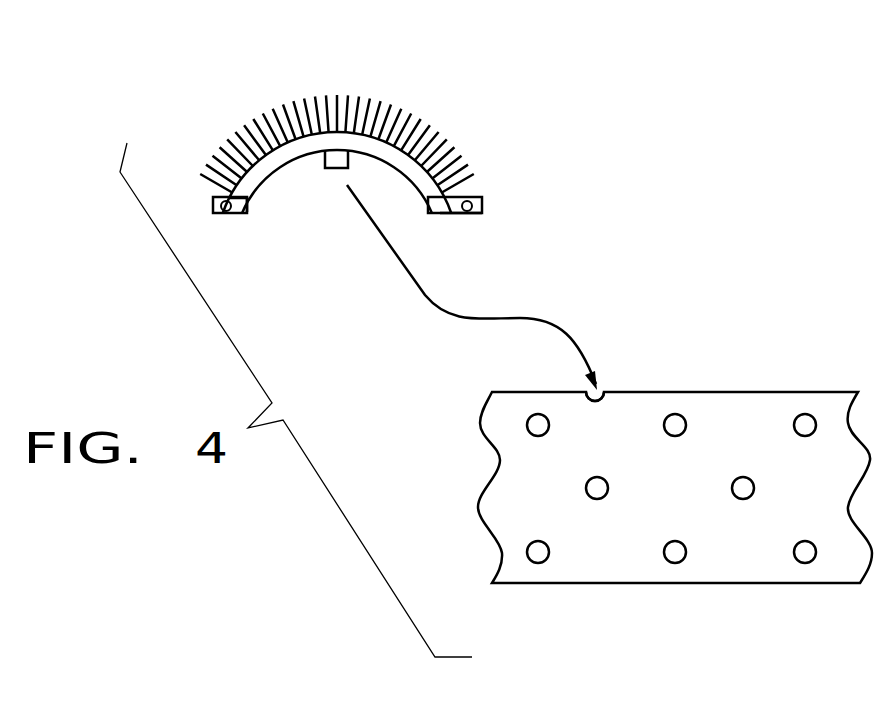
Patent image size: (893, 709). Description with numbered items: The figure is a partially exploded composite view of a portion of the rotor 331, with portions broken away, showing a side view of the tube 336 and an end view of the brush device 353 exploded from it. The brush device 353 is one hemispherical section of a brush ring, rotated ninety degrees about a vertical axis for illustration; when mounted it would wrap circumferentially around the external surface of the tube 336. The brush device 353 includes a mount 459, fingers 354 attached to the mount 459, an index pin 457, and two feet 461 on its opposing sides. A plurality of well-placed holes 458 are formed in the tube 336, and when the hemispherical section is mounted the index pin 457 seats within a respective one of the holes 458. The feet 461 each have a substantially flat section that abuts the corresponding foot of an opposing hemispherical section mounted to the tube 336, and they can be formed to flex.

The rotor 331 is at (640, 180).
The tube 336 is at (530, 585).
The brush device 353 is at (243, 122).
The fingers 354 is at (330, 97).
The index pin 457 is at (325, 168).
The holes 458 is at (600, 388).
The mount 459 is at (268, 187).
The feet 461 is at (453, 214).